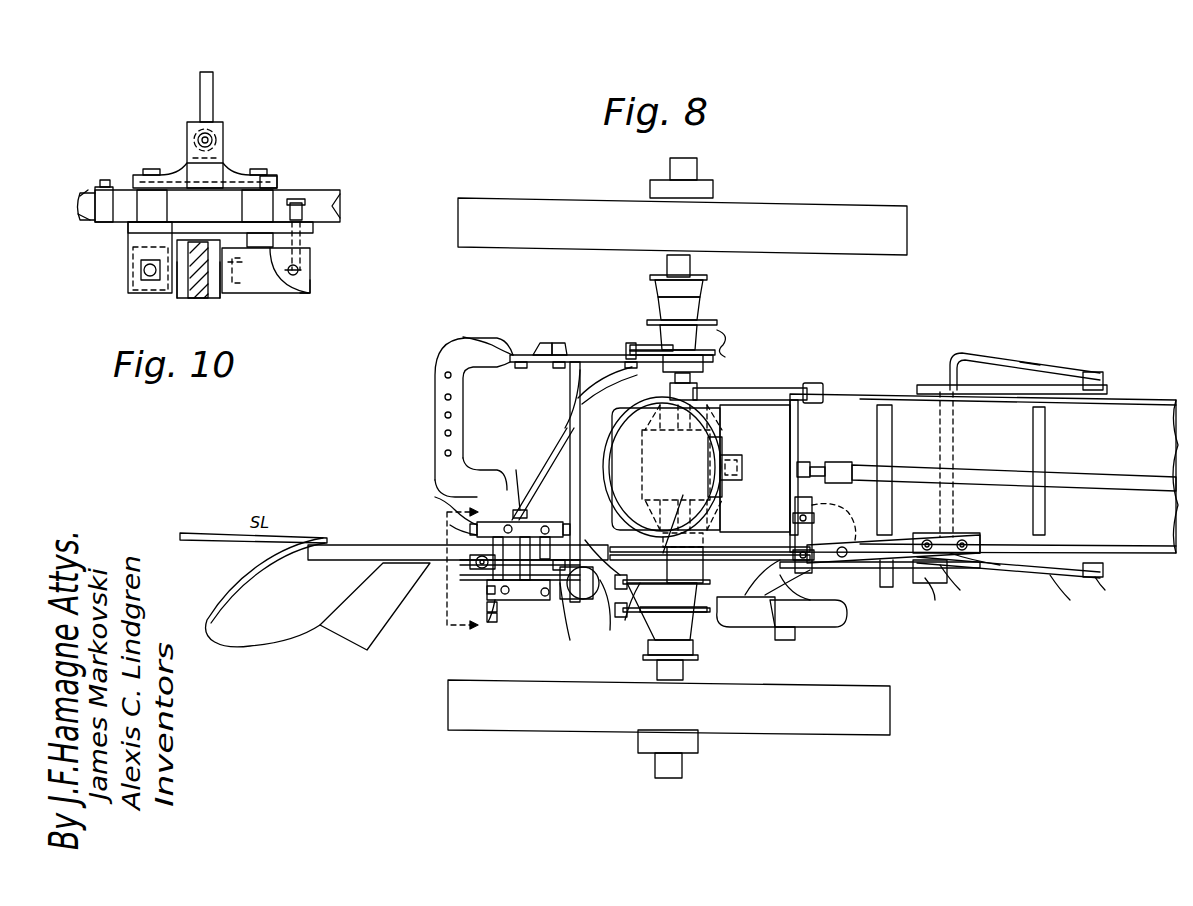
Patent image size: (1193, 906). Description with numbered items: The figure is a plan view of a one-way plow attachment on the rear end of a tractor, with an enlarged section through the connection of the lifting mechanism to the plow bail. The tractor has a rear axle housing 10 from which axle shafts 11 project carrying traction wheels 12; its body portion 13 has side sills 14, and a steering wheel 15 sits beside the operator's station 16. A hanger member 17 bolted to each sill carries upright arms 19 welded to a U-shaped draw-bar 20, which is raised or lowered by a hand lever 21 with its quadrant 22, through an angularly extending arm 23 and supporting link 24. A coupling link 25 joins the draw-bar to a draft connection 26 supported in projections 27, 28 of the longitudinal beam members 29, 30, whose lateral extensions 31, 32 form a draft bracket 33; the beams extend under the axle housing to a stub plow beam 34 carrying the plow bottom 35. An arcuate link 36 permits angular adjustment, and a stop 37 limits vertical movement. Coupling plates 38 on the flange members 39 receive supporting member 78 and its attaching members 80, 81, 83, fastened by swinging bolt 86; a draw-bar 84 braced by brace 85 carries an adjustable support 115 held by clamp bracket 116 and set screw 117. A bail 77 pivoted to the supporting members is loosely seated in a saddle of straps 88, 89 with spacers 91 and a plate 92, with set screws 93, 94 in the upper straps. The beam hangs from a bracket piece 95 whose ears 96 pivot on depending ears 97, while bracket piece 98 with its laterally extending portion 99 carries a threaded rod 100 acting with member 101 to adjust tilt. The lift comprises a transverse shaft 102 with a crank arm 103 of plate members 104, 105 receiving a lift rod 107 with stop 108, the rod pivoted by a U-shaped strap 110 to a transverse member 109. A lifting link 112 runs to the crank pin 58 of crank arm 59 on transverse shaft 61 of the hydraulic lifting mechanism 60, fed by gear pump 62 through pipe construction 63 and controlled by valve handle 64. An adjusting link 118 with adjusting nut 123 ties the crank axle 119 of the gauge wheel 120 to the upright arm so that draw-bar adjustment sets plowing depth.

In FIG. 8, the rear axle housing 10 is at (703, 290).
In FIG. 8, the axle shafts 11 is at (697, 165).
In FIG. 8, the traction wheels 12 is at (780, 207).
In FIG. 8, the body portion 13 is at (870, 410).
In FIG. 8, the side sills 14 is at (910, 388).
In FIG. 8, the steering wheel 15 is at (800, 415).
In FIG. 8, the operator's seat or station 16 is at (722, 414).
In FIG. 8, the hanger member 17 is at (1000, 370).
In FIG. 8, the upright arms 19 is at (1100, 375).
In FIG. 8, the draw-bar 20 is at (962, 353).
In FIG. 8, the hand lever 21 is at (890, 590).
In FIG. 8, the quadrant 22 is at (985, 580).
In FIG. 8, the angularly extending arm 23 is at (930, 597).
In FIG. 8, the supporting link 24 is at (945, 585).
In FIG. 8, the coupling link 25 is at (870, 560).
In FIG. 8, the draft connection 26 is at (813, 599).
In FIG. 8, the projection 27 is at (812, 572).
In FIG. 8, the projection 28 is at (805, 510).
In FIG. 10, the longitudinal beam member 29 is at (220, 296).
In FIG. 8, the longitudinal beam member 29 is at (458, 552).
In FIG. 10, the longitudinal beam member 30 is at (177, 296).
In FIG. 8, the longitudinal beam member 30 is at (720, 520).
In FIG. 8, the lateral extension 31 is at (800, 615).
In FIG. 8, the lateral extension 32 is at (760, 550).
In FIG. 8, the draft bracket 33 is at (830, 462).
In FIG. 10, the stub plow beam 34 is at (200, 298).
In FIG. 8, the stub plow beam 34 is at (327, 540).
In FIG. 8, the plow bottom 35 is at (225, 605).
In FIG. 8, the arcuate link or arm 36 is at (880, 540).
In FIG. 8, the stop or abutment member 37 is at (847, 548).
In FIG. 8, the coupling plates 38 is at (668, 330).
In FIG. 8, the flange members 39 is at (722, 345).
In FIG. 8, the crank pin 58 is at (662, 596).
In FIG. 8, the crank arm 59 is at (703, 545).
In FIG. 8, the hydraulic lifting mechanism 60 is at (722, 462).
In FIG. 8, the transverse shaft 61 is at (697, 387).
In FIG. 8, the gear pump 62 is at (815, 383).
In FIG. 8, the pipe construction 63 is at (750, 388).
In FIG. 8, the valve handle 64 is at (742, 460).
In FIG. 10, the bail 77 is at (80, 217).
In FIG. 8, the bail 77 is at (560, 430).
In FIG. 8, the supporting member 78 is at (642, 568).
In FIG. 8, the member 80 is at (614, 619).
In FIG. 8, the member 81 is at (652, 611).
In FIG. 8, the member 83 is at (635, 345).
In FIG. 8, the draw-bar 84 is at (445, 358).
In FIG. 8, the brace 85 is at (520, 368).
In FIG. 8, the swinging bolt 86 is at (612, 378).
In FIG. 10, the straps 88 is at (272, 180).
In FIG. 8, the straps 88 is at (520, 600).
In FIG. 10, the straps 89 is at (112, 180).
In FIG. 8, the straps 89 is at (500, 522).
In FIG. 10, the spacers 91 is at (140, 200).
In FIG. 8, the spacers 91 is at (498, 558).
In FIG. 10, the plate 92 is at (308, 290).
In FIG. 8, the plate 92 is at (545, 537).
In FIG. 8, the set screw 93 is at (490, 624).
In FIG. 8, the set screw 94 is at (518, 470).
In FIG. 10, the bracket piece 95 is at (133, 262).
In FIG. 8, the bracket piece 95 is at (450, 525).
In FIG. 10, the ears 96 is at (141, 275).
In FIG. 10, the depending ears 97 is at (128, 245).
In FIG. 8, the depending ears 97 is at (438, 503).
In FIG. 10, the bracket piece 98 is at (240, 288).
In FIG. 10, the laterally extending portion 99 is at (310, 262).
In FIG. 10, the threaded rod 100 is at (300, 200).
In FIG. 8, the threaded rod 100 is at (490, 622).
In FIG. 10, the laterally extending member 101 is at (313, 230).
In FIG. 8, the laterally extending member 101 is at (490, 594).
In FIG. 8, the transverse shaft 102 is at (570, 392).
In FIG. 8, the crank arm 103 is at (478, 568).
In FIG. 8, the plate member 104 is at (573, 622).
In FIG. 8, the plate member 105 is at (582, 595).
In FIG. 10, the lift rod 107 is at (213, 83).
In FIG. 8, the lift rod 107 is at (462, 563).
In FIG. 8, the stop 108 is at (485, 569).
In FIG. 10, the transverse member 109 is at (175, 168).
In FIG. 8, the transverse member 109 is at (490, 612).
In FIG. 10, the U-shaped strap 110 is at (223, 125).
In FIG. 8, the U-shaped strap 110 is at (530, 575).
In FIG. 8, the lifting link 112 is at (688, 515).
In FIG. 8, the adjustable support 115 is at (492, 345).
In FIG. 8, the adjustable clamp bracket 116 is at (560, 343).
In FIG. 8, the set screw 117 is at (540, 343).
In FIG. 8, the adjusting link 118 is at (1070, 602).
In FIG. 8, the crank axle 119 is at (760, 615).
In FIG. 8, the gauge wheel 120 is at (810, 630).
In FIG. 8, the adjusting nut 123 is at (1114, 593).